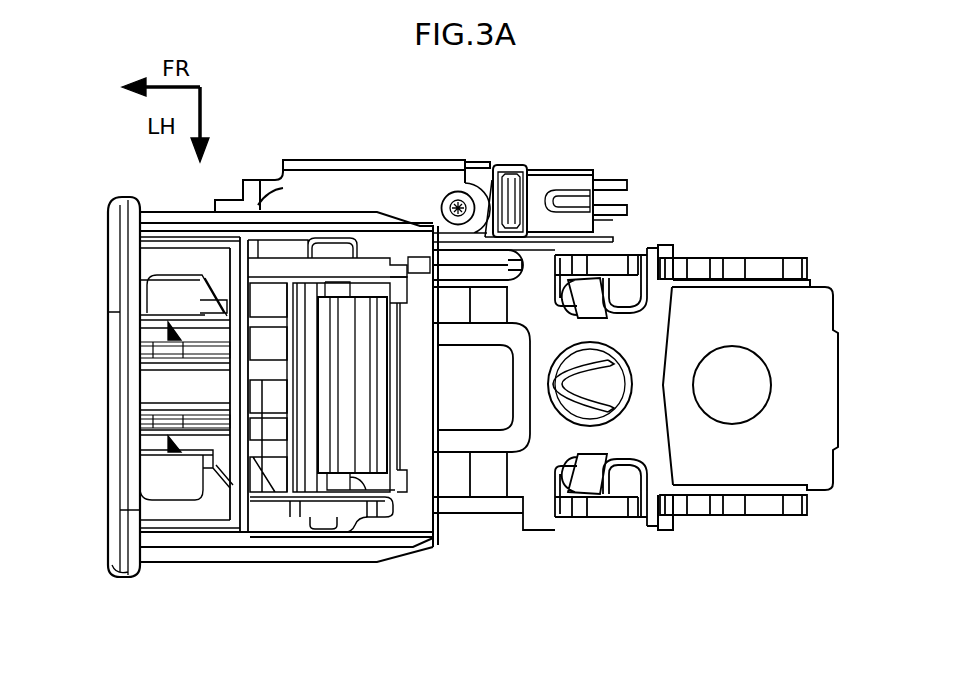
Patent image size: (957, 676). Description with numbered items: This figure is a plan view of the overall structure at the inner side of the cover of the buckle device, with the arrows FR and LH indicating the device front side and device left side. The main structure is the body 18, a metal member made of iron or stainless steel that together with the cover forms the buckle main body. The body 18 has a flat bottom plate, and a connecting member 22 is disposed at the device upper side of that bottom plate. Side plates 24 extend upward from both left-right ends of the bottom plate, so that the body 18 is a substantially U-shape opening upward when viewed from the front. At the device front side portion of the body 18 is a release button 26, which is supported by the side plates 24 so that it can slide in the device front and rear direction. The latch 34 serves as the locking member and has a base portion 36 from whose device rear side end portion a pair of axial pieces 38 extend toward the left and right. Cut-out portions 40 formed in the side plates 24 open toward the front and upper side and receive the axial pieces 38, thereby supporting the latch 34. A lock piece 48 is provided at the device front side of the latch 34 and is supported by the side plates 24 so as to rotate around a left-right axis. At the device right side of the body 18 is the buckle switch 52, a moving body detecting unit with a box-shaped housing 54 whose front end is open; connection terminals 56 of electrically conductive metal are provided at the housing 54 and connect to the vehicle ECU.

The body 18 is at (768, 367).
The connecting member 22 is at (822, 457).
The side plates 24 is at (778, 258).
The release button 26 is at (108, 472).
The latch 34 is at (680, 452).
The base portion 36 is at (655, 370).
The axial pieces 38 is at (668, 245).
The cut-out portions 40 is at (652, 266).
The lock piece 48 is at (345, 465).
The buckle switch 52 is at (496, 153).
The housing 54 is at (490, 165).
The connection terminals 56 is at (604, 180).